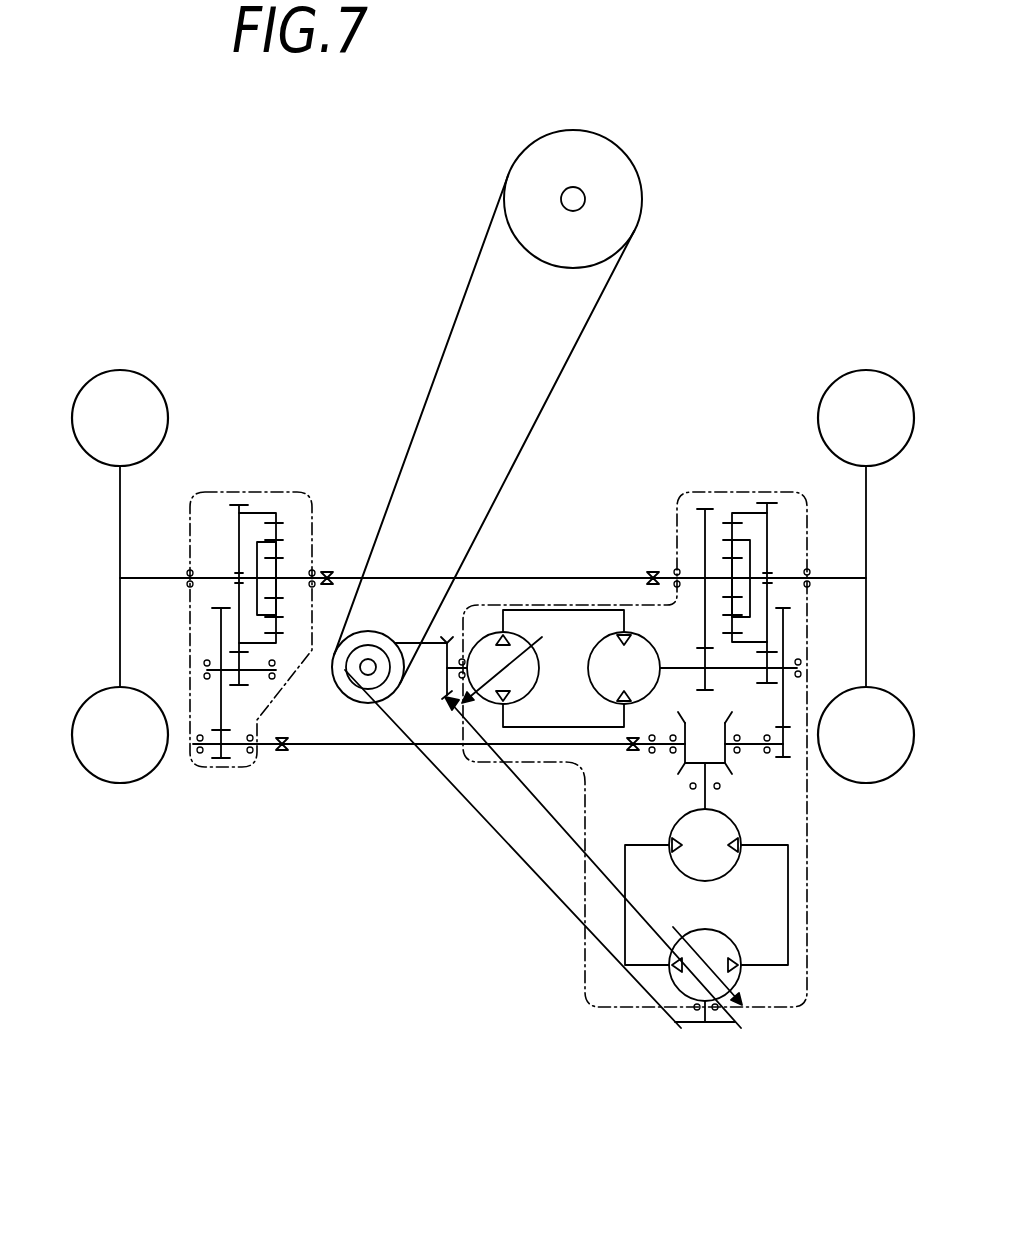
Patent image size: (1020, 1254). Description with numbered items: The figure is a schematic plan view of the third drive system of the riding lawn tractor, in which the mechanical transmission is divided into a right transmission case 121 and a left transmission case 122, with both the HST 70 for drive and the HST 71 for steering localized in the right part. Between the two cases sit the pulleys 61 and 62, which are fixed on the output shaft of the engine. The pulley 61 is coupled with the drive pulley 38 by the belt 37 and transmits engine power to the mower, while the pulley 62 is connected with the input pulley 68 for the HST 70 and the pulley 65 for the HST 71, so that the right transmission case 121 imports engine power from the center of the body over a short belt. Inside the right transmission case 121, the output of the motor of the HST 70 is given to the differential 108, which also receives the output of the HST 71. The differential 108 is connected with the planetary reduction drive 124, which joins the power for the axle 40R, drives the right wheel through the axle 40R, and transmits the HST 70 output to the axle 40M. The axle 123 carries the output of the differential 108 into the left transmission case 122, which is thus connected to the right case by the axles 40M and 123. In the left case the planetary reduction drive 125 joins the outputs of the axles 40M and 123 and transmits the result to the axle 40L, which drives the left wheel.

The belt 37 is at (453, 320).
The drive pulley 38 is at (537, 173).
The axle 40L is at (146, 577).
The axle 40M is at (523, 576).
The axle 40R is at (826, 580).
The pulley 61 is at (376, 640).
The pulley 62 is at (360, 682).
The pulley 65 is at (698, 1024).
The input pulley 68 is at (440, 698).
The HST for drive 70 is at (570, 629).
The HST for steering 71 is at (756, 896).
The differential 108 is at (741, 780).
The right transmission case 121 is at (778, 524).
The left transmission case 122 is at (286, 488).
The axle 123 is at (283, 752).
The planetary reduction drive 124 is at (860, 494).
The planetary reduction drive 125 is at (222, 533).